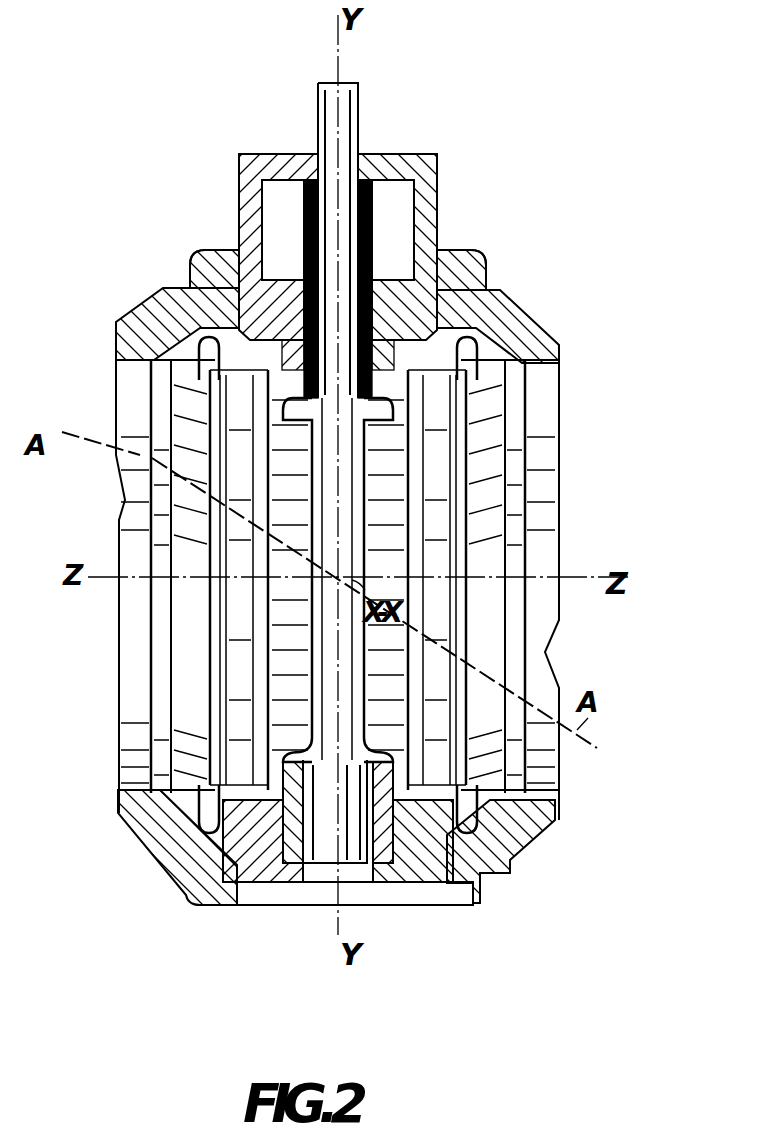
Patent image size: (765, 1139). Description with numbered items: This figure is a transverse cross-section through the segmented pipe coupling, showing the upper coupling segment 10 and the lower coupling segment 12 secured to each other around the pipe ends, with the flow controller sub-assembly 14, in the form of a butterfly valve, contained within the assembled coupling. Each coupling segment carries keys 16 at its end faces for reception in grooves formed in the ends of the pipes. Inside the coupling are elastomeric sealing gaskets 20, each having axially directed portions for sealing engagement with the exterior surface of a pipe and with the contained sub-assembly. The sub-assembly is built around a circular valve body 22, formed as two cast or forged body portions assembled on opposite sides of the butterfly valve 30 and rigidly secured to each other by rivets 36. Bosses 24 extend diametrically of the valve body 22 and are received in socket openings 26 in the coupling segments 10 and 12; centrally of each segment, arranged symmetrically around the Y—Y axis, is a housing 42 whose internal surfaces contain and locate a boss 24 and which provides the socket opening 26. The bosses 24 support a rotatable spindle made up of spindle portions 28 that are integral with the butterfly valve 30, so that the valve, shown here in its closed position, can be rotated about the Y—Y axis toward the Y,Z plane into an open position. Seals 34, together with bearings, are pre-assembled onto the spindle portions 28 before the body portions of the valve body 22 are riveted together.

The upper coupling segment 10 is at (538, 345).
The lower coupling segment 12 is at (527, 847).
The flow controller sub-assembly 14 is at (432, 155).
The keys 16 is at (148, 452).
The sealing gaskets 20 is at (150, 330).
The circular valve body 22 is at (403, 493).
The bosses 24 is at (449, 253).
The socket openings 26 is at (197, 273).
The spindle portions 28 is at (350, 104).
The butterfly valve 30 is at (333, 686).
The seals 34 is at (291, 300).
The rivets 36 is at (199, 365).
The housing 42 is at (485, 260).